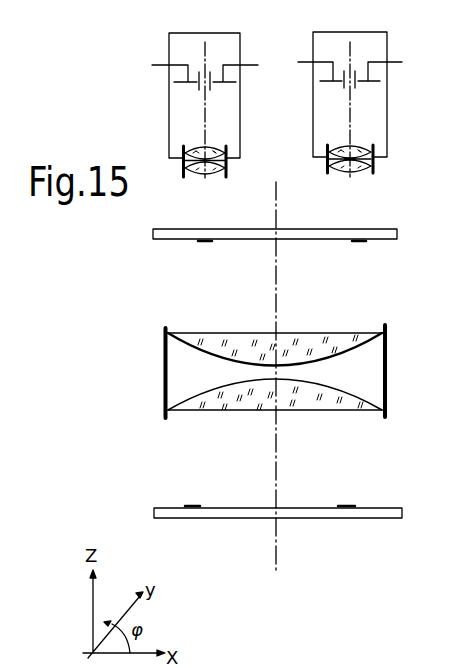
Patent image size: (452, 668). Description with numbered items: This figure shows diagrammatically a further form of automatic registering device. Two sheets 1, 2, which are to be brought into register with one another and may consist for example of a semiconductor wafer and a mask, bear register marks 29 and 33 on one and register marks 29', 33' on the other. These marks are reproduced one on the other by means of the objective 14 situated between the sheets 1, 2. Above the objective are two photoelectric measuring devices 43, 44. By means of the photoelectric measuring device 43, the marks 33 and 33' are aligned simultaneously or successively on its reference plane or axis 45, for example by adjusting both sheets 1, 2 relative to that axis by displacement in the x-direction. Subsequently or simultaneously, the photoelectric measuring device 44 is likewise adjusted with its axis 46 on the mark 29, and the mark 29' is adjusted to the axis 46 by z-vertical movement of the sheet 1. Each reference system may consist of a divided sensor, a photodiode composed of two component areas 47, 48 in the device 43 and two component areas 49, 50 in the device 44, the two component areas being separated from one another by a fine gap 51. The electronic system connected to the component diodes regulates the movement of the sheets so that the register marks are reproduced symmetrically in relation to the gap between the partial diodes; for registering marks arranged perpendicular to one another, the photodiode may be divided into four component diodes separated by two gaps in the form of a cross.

The sheet 1 is at (402, 516).
The sheet 2 is at (397, 231).
The objective 14 is at (388, 368).
The register mark 29 is at (378, 251).
The register mark 29' is at (186, 489).
The register mark 33 is at (192, 251).
The register mark 33' is at (339, 489).
The photoelectric measuring device 43 is at (169, 118).
The photoelectric measuring device 44 is at (387, 126).
The reference plane or axis 45 is at (205, 50).
The axis 46 is at (358, 49).
The component area 47 is at (174, 81).
The component area 48 is at (236, 81).
The component area 49 is at (320, 80).
The component area 50 is at (380, 80).
The fine gap 51 is at (207, 87).